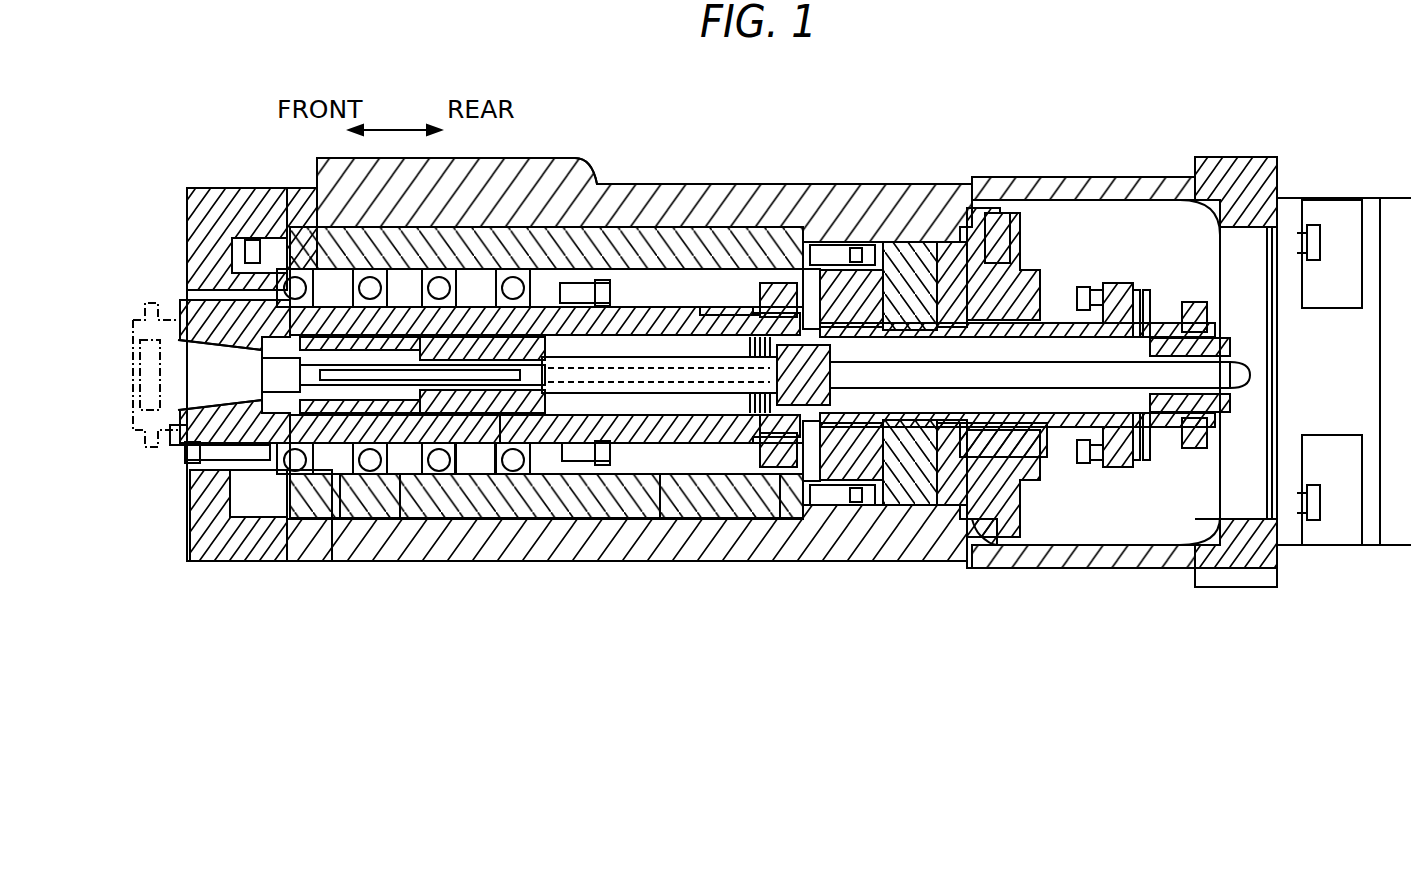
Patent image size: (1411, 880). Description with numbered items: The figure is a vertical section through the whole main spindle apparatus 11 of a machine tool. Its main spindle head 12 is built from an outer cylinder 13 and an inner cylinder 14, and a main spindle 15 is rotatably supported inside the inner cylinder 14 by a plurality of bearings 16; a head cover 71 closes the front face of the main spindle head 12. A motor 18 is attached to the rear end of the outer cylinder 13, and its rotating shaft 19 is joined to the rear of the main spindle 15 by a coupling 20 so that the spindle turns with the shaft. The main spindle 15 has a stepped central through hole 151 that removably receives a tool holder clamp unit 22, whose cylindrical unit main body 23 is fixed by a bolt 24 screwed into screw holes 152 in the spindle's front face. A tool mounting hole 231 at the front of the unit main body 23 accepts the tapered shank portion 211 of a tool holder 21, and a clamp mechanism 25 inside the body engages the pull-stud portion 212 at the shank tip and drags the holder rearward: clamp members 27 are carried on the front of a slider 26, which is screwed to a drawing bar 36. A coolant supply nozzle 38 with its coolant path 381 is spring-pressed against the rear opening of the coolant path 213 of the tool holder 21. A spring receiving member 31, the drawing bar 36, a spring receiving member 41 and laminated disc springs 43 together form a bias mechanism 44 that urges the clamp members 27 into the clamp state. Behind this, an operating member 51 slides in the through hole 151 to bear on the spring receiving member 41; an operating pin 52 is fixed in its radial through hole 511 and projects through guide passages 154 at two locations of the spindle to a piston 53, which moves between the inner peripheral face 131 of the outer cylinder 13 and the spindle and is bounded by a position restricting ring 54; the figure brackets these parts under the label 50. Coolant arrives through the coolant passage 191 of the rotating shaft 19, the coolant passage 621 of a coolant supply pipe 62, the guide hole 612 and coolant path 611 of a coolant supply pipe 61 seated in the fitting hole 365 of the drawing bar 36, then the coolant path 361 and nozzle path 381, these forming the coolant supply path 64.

The main spindle apparatus 11 is at (687, 160).
The main spindle head 12 is at (629, 323).
The outer cylinder 13 is at (612, 190).
The inner cylinder 14 is at (655, 230).
The main spindle 15 is at (540, 333).
The bearings 16 is at (305, 266).
The motor 18 is at (1397, 207).
The rotating shaft 19 is at (1252, 352).
The coolant passage 191 is at (1232, 384).
The coupling 20 is at (1124, 366).
The tool holder 21 is at (155, 336).
The tapered shank portion 211 is at (160, 415).
The coolant path 213 is at (332, 288).
The tool holder clamp unit 22 is at (467, 320).
The unit main body 23 is at (410, 482).
The tool mounting hole 231 is at (149, 375).
The bolt 24 is at (178, 455).
The clamp mechanism 25 is at (467, 482).
The slider 26 is at (448, 452).
The clamp members 27 is at (277, 370).
The spring receiving member 31 is at (518, 420).
The drawing bar 36 is at (661, 437).
The coolant path 361 is at (724, 470).
The fitting hole 365 is at (845, 490).
The coolant supply nozzle 38 is at (355, 482).
The coolant path 381 is at (383, 496).
The spring receiving member 41 is at (737, 336).
The disc springs 43 is at (737, 428).
The bias mechanism 44 is at (620, 398).
The clamp mechanism 50 is at (953, 303).
The operating member 51 is at (893, 250).
The operating pin 52 is at (940, 262).
The piston 53 is at (962, 265).
The position restricting ring 54 is at (988, 242).
The through hole 511 is at (957, 482).
The coolant supply pipe 61 is at (930, 505).
The coolant path 611 is at (887, 485).
The guide hole 612 is at (1013, 470).
The coolant supply pipe 62 is at (1068, 362).
The coolant passage 621 is at (1058, 413).
The coolant supply path 64 is at (1182, 425).
The head cover 71 is at (198, 188).
The inner peripheral face 131 is at (926, 245).
The through hole 151 is at (610, 344).
The screw holes 152 is at (235, 540).
The guide passage 154 is at (876, 242).
The pull-stud portion 212 is at (303, 540).